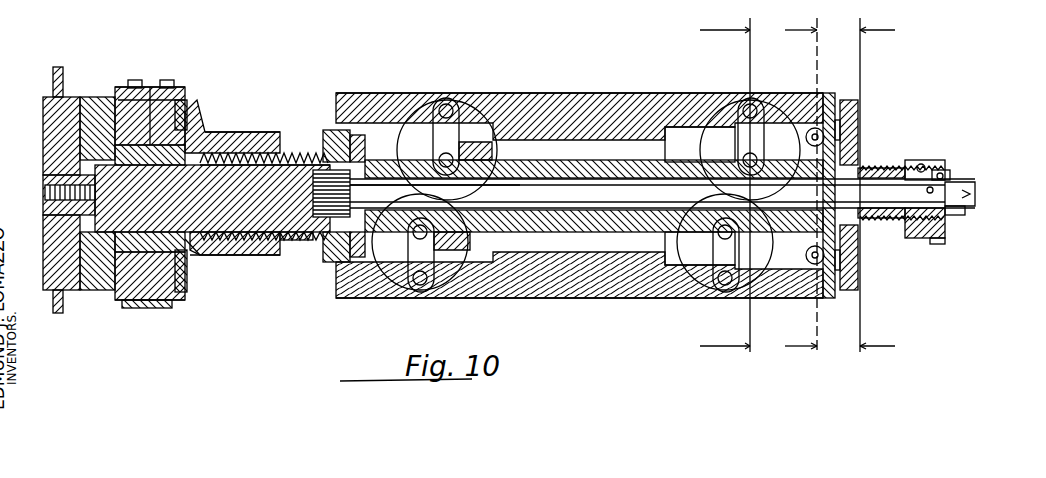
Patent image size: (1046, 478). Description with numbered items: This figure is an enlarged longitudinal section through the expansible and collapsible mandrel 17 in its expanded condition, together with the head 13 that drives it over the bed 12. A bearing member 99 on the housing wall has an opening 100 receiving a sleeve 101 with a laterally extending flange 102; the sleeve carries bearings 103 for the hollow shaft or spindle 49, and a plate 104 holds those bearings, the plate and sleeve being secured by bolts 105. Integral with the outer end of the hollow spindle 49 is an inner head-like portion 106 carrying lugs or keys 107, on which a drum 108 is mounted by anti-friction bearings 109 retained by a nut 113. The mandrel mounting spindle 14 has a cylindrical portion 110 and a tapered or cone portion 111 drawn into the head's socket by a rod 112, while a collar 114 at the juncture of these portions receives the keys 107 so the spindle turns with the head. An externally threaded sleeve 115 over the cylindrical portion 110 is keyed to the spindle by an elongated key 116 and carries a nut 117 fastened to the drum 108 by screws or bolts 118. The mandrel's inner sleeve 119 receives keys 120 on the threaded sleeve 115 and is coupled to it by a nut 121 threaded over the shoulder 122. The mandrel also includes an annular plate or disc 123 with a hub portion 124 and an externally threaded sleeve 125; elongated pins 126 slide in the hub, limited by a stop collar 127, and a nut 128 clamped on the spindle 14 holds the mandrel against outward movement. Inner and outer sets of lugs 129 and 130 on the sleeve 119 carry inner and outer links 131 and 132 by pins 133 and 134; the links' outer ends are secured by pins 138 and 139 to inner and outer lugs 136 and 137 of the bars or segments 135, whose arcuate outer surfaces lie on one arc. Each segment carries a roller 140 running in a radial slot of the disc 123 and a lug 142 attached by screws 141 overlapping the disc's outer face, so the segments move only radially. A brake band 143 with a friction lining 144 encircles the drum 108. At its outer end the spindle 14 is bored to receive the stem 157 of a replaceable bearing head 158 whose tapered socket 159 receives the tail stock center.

The bed 12 is at (880, 189).
The head 13 is at (182, 80).
The mandrel mounting spindle 14 is at (553, 190).
The expansible and collapsible mandrel 17 is at (540, 92).
The tubular shaft or sleeve 49 is at (46, 180).
The bearing member 99 is at (121, 105).
The opening 100 is at (50, 132).
The sleeve 101 is at (45, 112).
The laterally extending flange 102 is at (118, 100).
The bearings 103 is at (114, 95).
The plate 104 is at (98, 278).
The bolts 105 is at (126, 120).
The inner head-like portion 106 is at (202, 258).
The lugs or keys 107 is at (208, 140).
The drum 108 is at (196, 104).
The anti-friction bearings 109 is at (146, 96).
The cylindrical portion 110 is at (290, 242).
The tapered or cone portion 111 is at (151, 90).
The rod 112 is at (50, 200).
The nut 113 is at (206, 135).
The collar 114 is at (218, 252).
The externally threaded sleeve 115 is at (300, 165).
The elongated key 116 is at (252, 158).
The nut 117 is at (246, 153).
The screws or bolts 118 is at (210, 128).
The inner sleeve 119 is at (597, 105).
The keys 120 is at (340, 128).
The nut 121 is at (336, 264).
The shoulder 122 is at (376, 132).
The annular plate or disc 123 is at (870, 168).
The hub portion 124 is at (876, 180).
The externally threaded sleeve 125 is at (902, 232).
The elongated pins 126 is at (920, 160).
The collar 127 is at (942, 170).
The nut 128 is at (942, 240).
The inner set of lugs 129 is at (463, 193).
The outer set of lugs 130 is at (765, 142).
The inner links 131 is at (455, 105).
The outer links 132 is at (762, 110).
The pin 133 is at (440, 186).
The pin 134 is at (742, 203).
The bars or segments 135 is at (616, 92).
The inner set of lugs 136 is at (412, 103).
The outer set of lugs 137 is at (720, 124).
The pins 138 is at (450, 100).
The pins 139 is at (760, 99).
The roller 140 is at (828, 93).
The screws 141 is at (852, 100).
The lug 142 is at (860, 117).
The brake band 143 is at (134, 310).
The friction lining 144 is at (152, 310).
The stem 157 is at (964, 181).
The bearing head 158 is at (968, 213).
The tapered socket 159 is at (975, 195).